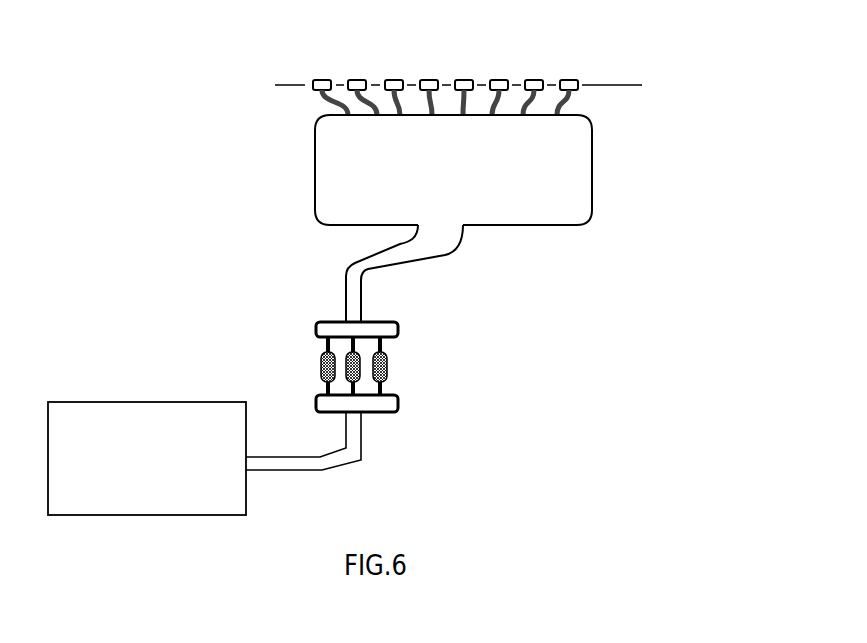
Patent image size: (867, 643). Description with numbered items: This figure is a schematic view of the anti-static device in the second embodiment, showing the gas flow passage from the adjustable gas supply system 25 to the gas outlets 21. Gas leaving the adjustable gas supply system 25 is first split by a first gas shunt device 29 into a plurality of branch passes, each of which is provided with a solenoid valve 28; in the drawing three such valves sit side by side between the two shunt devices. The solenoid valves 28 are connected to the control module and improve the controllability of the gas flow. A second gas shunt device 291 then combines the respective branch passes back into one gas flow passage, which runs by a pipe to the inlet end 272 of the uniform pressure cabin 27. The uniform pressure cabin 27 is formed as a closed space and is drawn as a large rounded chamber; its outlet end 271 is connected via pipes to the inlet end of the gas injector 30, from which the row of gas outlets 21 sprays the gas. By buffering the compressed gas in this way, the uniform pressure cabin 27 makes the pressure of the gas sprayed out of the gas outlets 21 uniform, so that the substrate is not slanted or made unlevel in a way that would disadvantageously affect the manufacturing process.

The gas outlets 21 is at (557, 82).
The gas injector 30 is at (568, 80).
The outlet end 271 is at (572, 100).
The uniform pressure cabin 27 is at (580, 174).
The inlet end 272 is at (445, 237).
The second gas shunt device 291 is at (398, 327).
The solenoid valve 28 is at (386, 367).
The first gas shunt device 29 is at (382, 403).
The adjustable gas supply system 25 is at (147, 402).